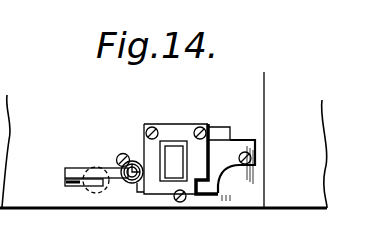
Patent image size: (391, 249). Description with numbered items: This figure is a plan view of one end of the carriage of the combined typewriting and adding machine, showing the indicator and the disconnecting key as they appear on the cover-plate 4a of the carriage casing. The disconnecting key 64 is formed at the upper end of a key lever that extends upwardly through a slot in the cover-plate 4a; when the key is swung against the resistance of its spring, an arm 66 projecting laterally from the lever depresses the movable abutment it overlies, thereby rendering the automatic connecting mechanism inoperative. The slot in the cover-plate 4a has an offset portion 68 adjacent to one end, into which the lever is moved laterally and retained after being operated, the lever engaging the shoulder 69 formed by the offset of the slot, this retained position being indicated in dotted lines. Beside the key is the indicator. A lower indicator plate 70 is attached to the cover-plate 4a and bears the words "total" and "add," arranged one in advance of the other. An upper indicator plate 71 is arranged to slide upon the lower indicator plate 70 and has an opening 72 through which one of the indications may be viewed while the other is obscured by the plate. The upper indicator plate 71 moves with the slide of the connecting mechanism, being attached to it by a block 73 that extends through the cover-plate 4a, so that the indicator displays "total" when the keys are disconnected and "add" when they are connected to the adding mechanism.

The cover-plate 4a is at (257, 122).
The disconnecting key 64 is at (135, 166).
The arm 66 is at (72, 172).
The offset portion 68 is at (75, 186).
The shoulder 69 is at (108, 183).
The lower indicator plate 70 is at (227, 158).
The upper indicator plate 71 is at (160, 129).
The opening 72 is at (176, 141).
The block 73 is at (219, 128).